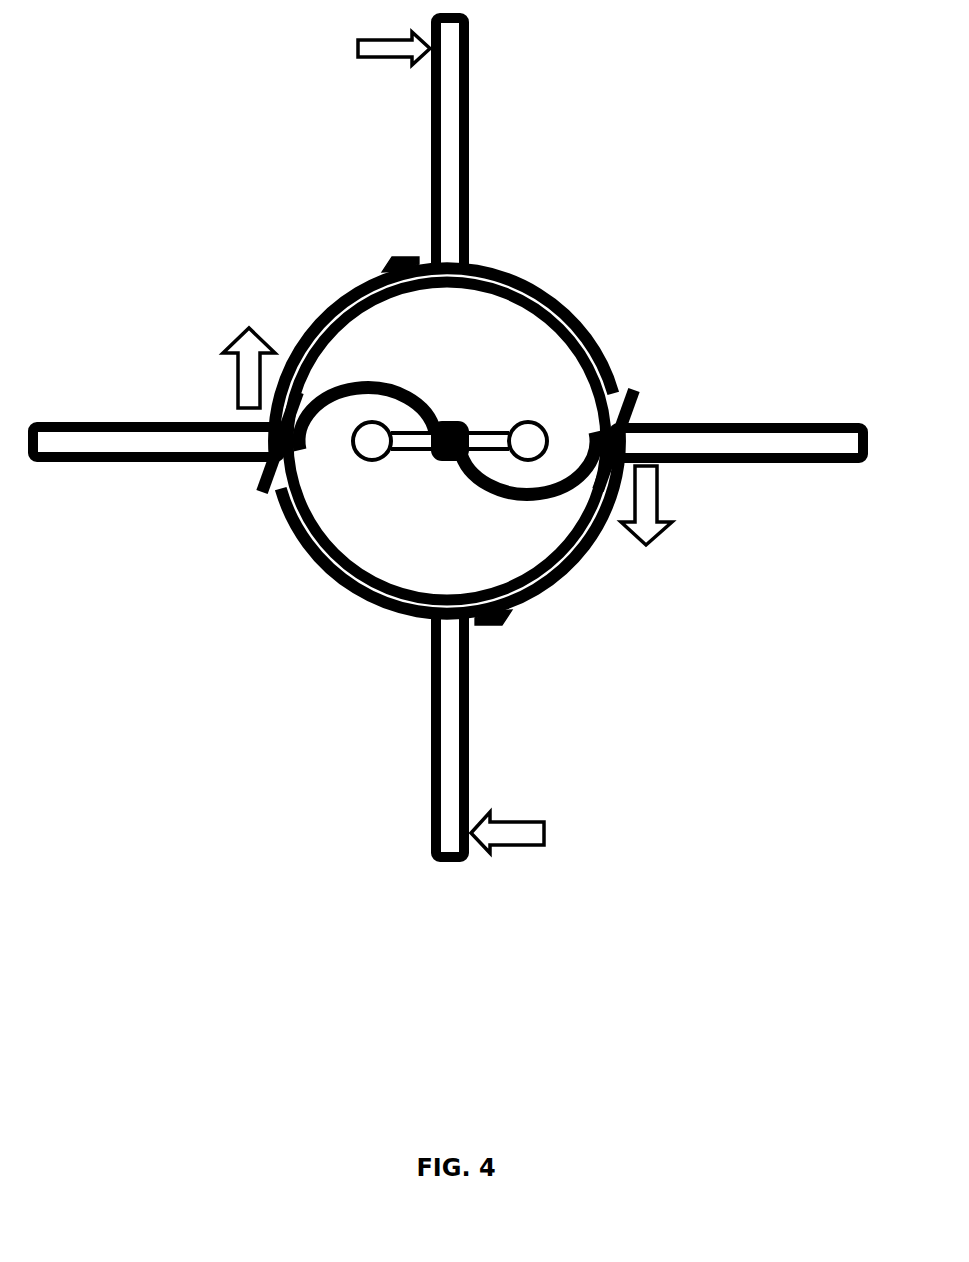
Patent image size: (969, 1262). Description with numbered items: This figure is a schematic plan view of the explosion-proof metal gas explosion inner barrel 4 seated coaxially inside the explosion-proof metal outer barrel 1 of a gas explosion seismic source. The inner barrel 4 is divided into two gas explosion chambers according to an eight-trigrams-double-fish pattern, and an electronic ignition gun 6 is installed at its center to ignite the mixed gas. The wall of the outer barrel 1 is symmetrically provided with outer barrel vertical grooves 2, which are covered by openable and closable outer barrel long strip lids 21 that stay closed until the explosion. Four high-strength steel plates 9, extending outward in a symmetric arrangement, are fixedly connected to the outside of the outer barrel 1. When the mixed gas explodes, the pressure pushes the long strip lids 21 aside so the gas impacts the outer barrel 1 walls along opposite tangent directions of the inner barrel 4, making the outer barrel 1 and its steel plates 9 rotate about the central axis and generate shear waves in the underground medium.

The explosion-proof metal outer barrel 1 is at (307, 330).
The outer barrel vertical groove 2 is at (636, 392).
The explosion-proof metal gas explosion inner barrel 4 is at (548, 318).
The electronic ignition gun 6 is at (529, 441).
The high-strength steel plate 9 is at (448, 437).
The outer barrel long strip lid 21 is at (410, 257).